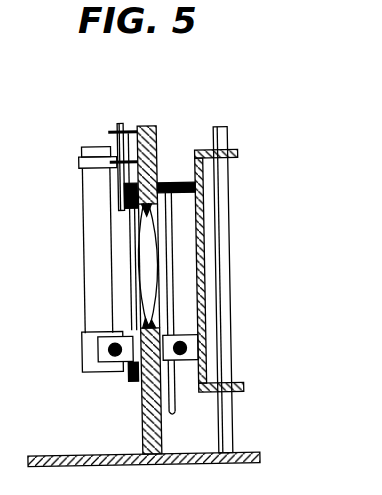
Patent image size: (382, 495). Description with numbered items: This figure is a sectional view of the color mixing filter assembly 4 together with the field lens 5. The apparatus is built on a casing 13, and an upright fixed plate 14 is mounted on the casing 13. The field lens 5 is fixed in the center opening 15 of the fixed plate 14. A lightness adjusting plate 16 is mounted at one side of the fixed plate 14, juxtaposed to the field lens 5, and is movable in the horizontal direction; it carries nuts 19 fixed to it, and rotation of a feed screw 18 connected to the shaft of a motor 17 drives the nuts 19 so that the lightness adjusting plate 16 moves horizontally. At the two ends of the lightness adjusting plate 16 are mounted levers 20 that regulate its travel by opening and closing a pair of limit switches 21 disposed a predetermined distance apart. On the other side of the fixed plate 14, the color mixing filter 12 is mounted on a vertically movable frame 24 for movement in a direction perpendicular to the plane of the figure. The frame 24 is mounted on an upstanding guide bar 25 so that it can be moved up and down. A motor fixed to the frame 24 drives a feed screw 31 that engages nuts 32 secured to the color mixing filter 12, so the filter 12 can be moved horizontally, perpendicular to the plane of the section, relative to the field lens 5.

The color mixing filter assembly 4 is at (187, 122).
The field lens 5 is at (131, 260).
The color mixing filter 12 is at (174, 252).
The casing 13 is at (57, 454).
The fixed plate 14 is at (153, 126).
The center opening 15 is at (131, 222).
The lightness adjusting plate 16 is at (136, 283).
The motor 17 is at (90, 181).
The feed screw 18 is at (113, 357).
The nuts 19 is at (82, 344).
The levers 20 is at (123, 124).
The limit switches 21 is at (114, 131).
The frame 24 is at (240, 155).
The guide bar 25 is at (228, 129).
The feed screw 31 is at (201, 352).
The nuts 32 is at (196, 338).